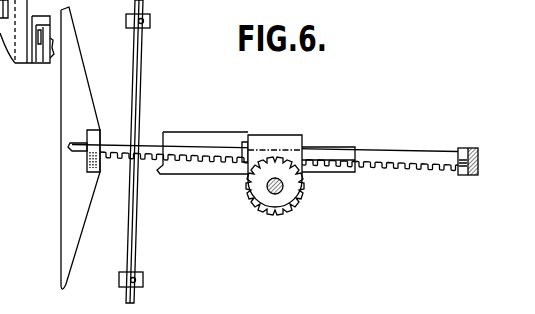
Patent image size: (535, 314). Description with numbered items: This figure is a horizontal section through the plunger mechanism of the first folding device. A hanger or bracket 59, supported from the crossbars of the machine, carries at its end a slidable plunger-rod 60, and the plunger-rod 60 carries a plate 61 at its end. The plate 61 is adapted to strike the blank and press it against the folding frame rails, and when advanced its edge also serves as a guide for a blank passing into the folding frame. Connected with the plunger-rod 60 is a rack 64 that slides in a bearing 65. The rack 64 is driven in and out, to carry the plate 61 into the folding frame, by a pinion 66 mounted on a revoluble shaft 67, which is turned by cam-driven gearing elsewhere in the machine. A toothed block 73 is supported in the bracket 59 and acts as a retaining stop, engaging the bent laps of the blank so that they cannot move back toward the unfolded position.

The hanger or bracket 59 is at (183, 136).
The plunger-rod 60 is at (70, 146).
The plate 61 is at (68, 207).
The rack 64 is at (388, 167).
The bearing 65 is at (298, 184).
The pinion 66 is at (265, 213).
The revoluble shaft 67 is at (278, 194).
The toothed block 73 is at (150, 19).